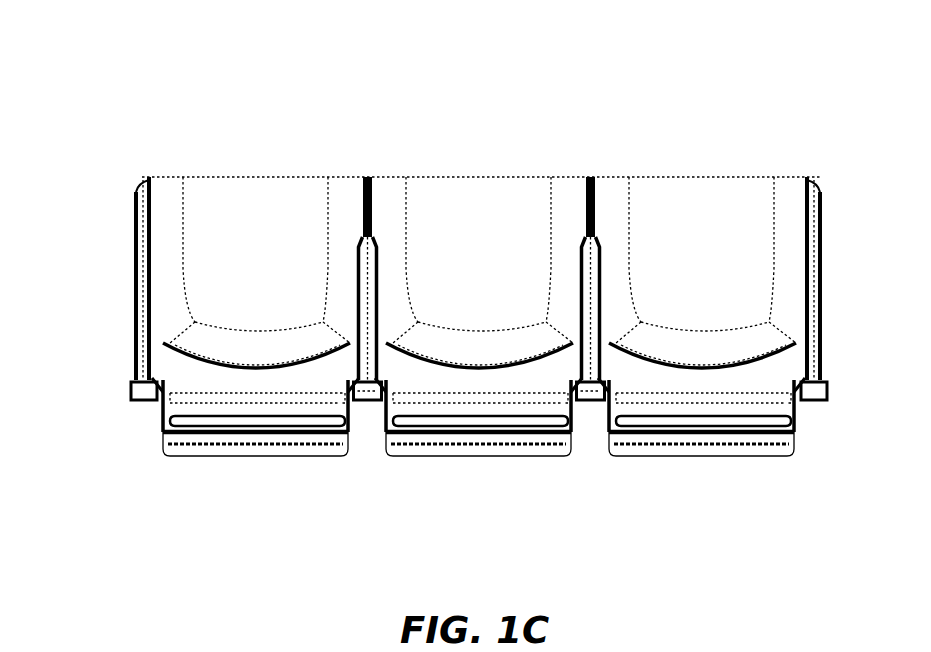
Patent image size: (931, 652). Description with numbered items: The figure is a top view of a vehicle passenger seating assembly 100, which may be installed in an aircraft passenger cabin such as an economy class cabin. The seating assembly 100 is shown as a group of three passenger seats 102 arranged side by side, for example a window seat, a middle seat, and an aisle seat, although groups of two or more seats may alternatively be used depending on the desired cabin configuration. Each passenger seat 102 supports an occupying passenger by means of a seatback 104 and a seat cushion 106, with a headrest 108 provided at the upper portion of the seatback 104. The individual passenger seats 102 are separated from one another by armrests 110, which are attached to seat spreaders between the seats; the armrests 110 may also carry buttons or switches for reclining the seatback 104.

The passenger seating assembly 100 is at (92, 66).
The passenger seat 102 is at (587, 145).
The seatback 104 is at (625, 378).
The seat cushion 106 is at (253, 237).
The headrest 108 is at (253, 417).
The armrest 110 is at (366, 303).